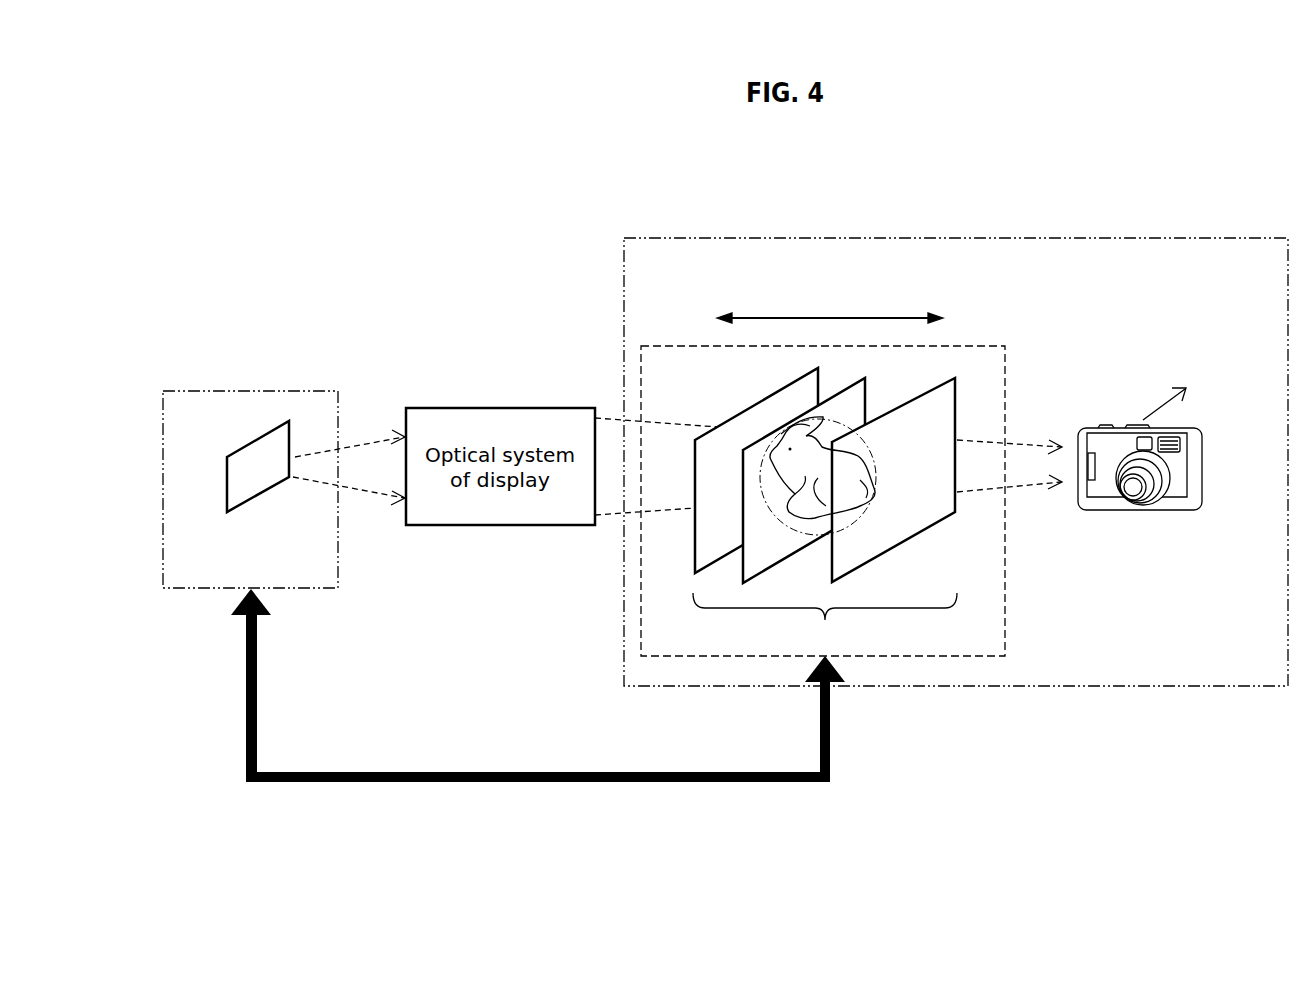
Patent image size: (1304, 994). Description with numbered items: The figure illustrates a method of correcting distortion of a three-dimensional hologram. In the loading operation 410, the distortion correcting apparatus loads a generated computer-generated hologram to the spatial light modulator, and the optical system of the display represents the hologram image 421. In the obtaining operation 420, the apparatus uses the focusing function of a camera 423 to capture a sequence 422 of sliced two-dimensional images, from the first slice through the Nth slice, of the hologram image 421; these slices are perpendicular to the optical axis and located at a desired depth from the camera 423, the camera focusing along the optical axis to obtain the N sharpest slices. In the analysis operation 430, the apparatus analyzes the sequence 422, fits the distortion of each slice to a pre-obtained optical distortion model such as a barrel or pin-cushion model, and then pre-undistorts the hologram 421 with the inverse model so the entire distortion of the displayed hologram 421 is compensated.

The CGH loading operation 410 is at (249, 391).
The sliced image obtaining operation 420 is at (948, 237).
The hologram image 421 is at (880, 515).
The sequence of sliced 2D images 422 is at (823, 501).
The camera 423 is at (1153, 512).
The analysis and compensation operation 430 is at (840, 731).